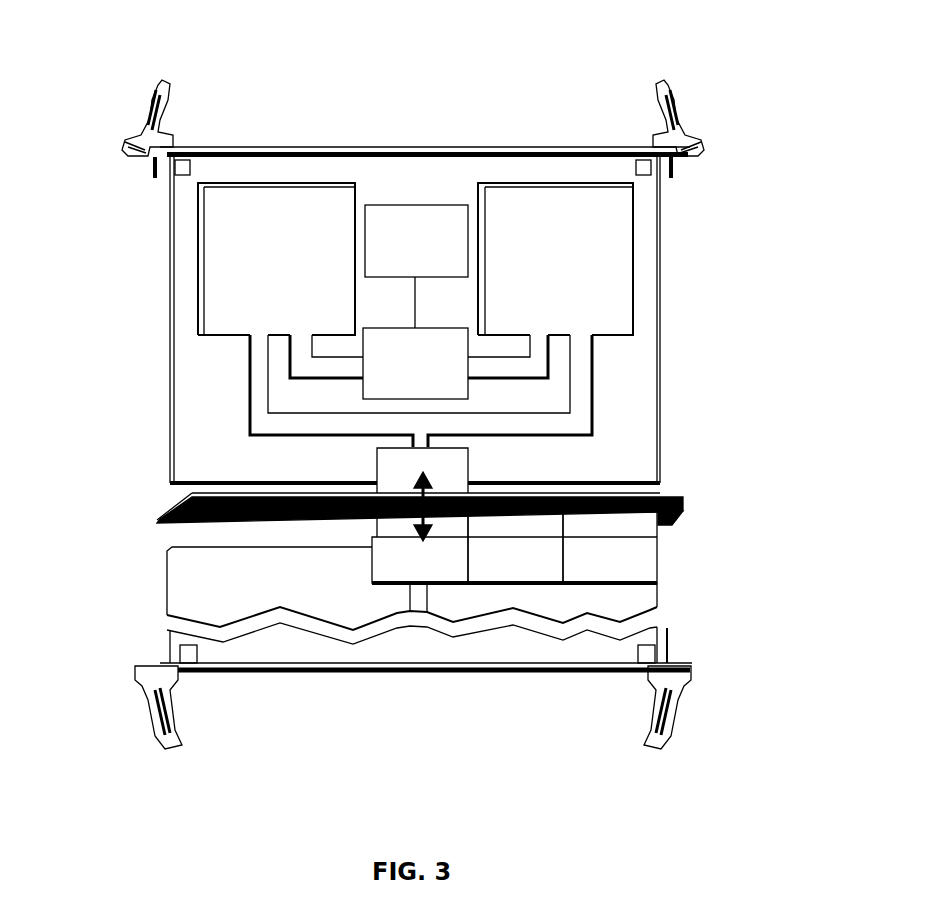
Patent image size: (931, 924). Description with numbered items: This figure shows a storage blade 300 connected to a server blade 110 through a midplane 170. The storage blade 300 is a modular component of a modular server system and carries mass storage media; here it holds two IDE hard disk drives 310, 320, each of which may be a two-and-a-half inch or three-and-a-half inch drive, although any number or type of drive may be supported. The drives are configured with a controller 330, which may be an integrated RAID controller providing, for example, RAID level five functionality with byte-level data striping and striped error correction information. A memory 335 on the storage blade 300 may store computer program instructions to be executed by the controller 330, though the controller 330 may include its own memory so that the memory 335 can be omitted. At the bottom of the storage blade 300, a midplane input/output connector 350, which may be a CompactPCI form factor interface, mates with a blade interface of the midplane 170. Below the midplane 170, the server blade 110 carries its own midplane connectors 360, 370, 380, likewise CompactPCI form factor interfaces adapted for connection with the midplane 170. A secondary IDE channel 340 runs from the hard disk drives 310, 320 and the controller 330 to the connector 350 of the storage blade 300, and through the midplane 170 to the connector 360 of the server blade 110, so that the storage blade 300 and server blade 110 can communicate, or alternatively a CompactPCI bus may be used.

The server blade 110 is at (634, 607).
The midplane 170 is at (690, 496).
The storage blade 300 is at (632, 367).
The IDE hard disk drive 310 is at (276, 210).
The IDE hard disk drive 320 is at (568, 210).
The controller 330 is at (450, 328).
The memory 335 is at (397, 205).
The secondary IDE channel 340 is at (330, 423).
The midplane input/output connector 350 is at (388, 464).
The midplane connector 360 is at (388, 565).
The midplane connector 370 is at (513, 548).
The midplane connector 380 is at (637, 550).